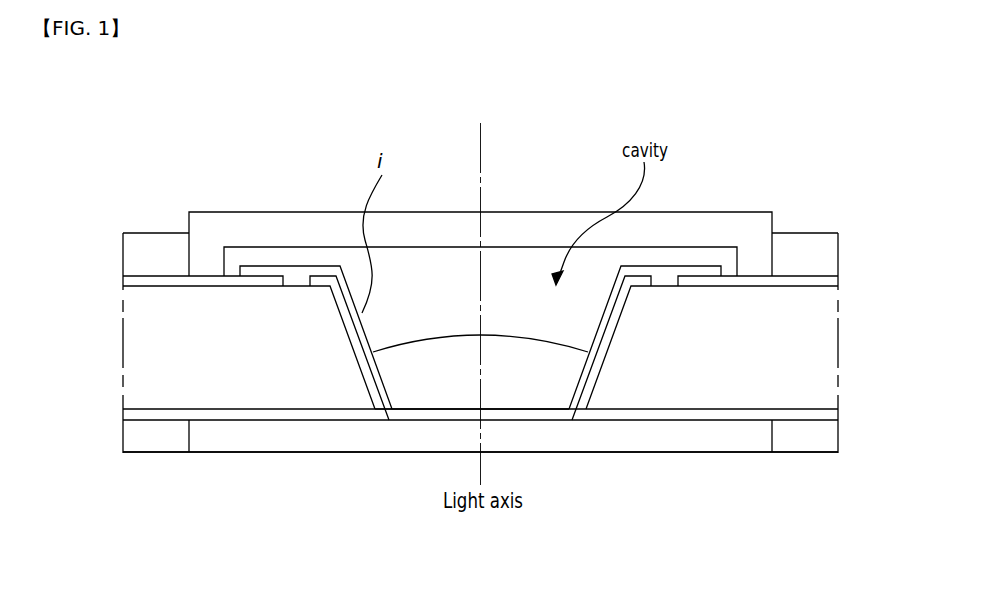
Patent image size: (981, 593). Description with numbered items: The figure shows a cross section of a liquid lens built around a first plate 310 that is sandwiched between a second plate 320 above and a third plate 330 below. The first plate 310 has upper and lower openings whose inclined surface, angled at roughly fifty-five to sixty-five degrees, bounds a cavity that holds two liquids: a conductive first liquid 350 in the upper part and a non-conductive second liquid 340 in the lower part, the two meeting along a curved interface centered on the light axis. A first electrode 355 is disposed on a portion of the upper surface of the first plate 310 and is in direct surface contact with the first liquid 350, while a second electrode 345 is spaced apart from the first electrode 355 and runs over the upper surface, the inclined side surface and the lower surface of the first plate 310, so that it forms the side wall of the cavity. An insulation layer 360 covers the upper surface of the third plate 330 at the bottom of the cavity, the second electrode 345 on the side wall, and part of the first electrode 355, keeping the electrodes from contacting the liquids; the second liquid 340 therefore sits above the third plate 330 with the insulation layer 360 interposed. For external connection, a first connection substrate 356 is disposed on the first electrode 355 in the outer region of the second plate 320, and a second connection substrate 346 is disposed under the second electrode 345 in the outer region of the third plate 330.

The first plate 310 is at (823, 360).
The second plate 320 is at (764, 220).
The third plate 330 is at (722, 440).
The second liquid 340 is at (528, 382).
The second electrode 345 is at (823, 413).
The second connection substrate 346 is at (823, 442).
The first liquid 350 is at (445, 267).
The first electrode 355 is at (823, 280).
The first connection substrate 356 is at (823, 257).
The insulation layer 360 is at (418, 415).